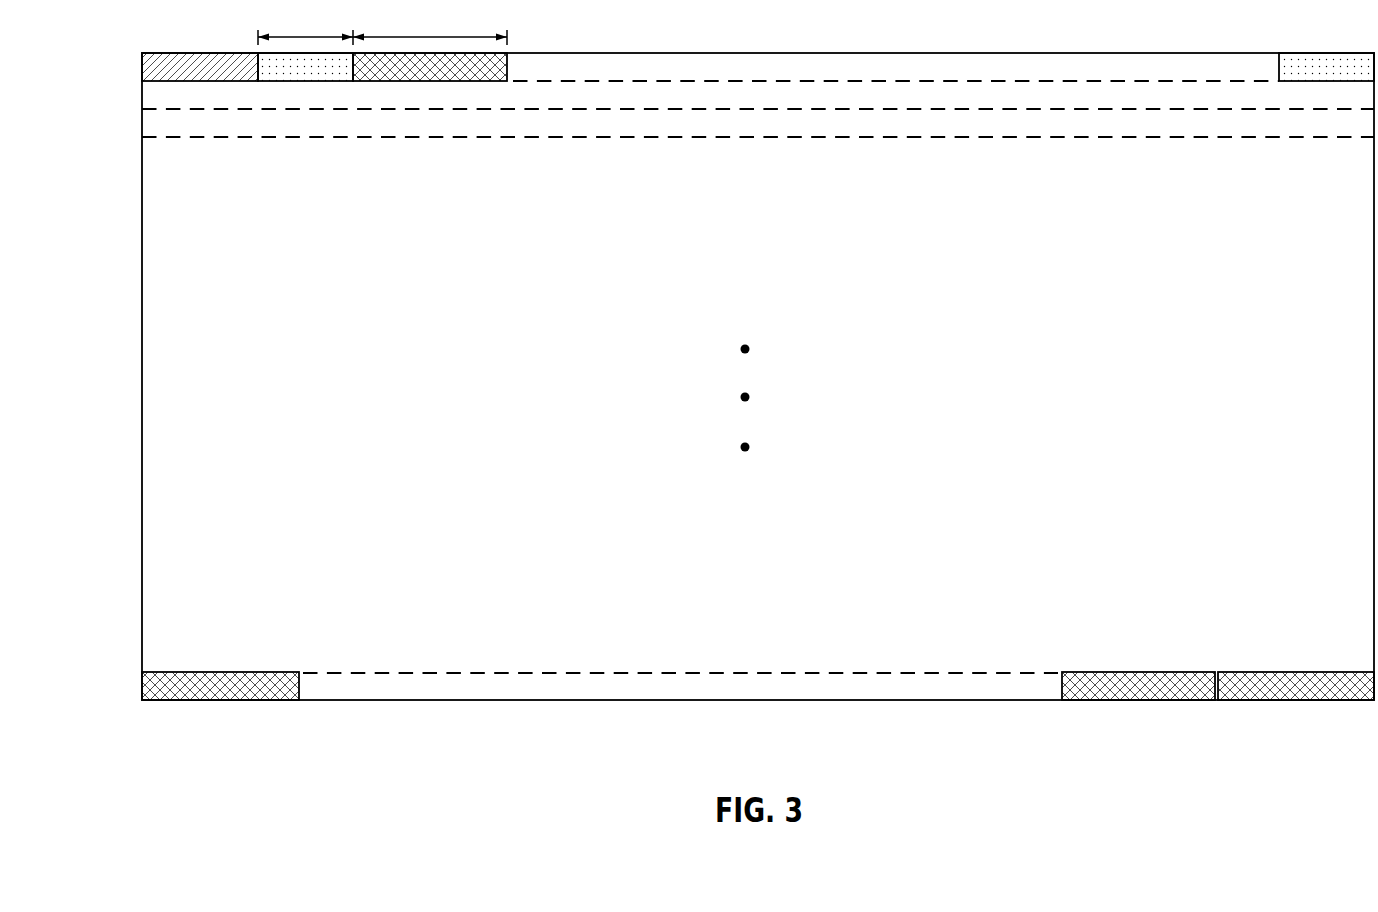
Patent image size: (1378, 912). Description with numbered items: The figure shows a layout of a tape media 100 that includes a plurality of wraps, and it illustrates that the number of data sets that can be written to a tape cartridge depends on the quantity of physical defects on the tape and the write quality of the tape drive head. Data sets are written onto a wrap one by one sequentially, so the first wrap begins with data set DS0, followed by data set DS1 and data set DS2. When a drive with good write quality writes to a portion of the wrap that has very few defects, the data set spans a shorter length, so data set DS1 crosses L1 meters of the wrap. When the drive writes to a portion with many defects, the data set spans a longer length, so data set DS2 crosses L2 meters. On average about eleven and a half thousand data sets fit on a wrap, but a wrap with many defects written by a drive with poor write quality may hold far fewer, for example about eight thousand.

The tape media 100 is at (758, 386).
The data set DS0 is at (200, 66).
The data set DS1 is at (305, 66).
The data set DS2 is at (430, 66).
The length of the wrap crossed by data set DS1 L1 is at (305, 22).
The length of the wrap crossed by data set DS2 L2 is at (430, 22).